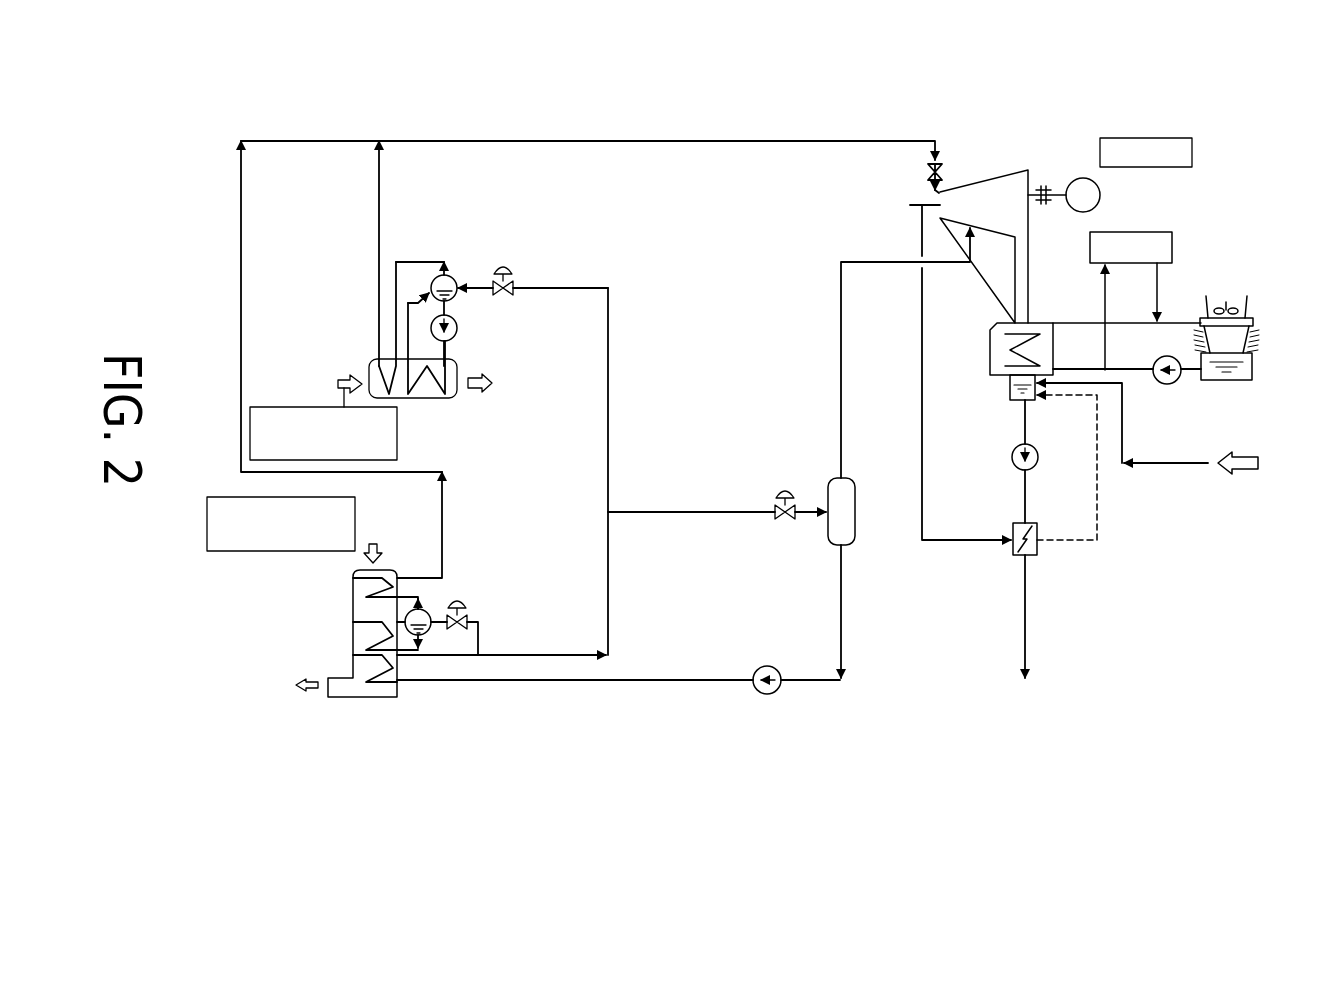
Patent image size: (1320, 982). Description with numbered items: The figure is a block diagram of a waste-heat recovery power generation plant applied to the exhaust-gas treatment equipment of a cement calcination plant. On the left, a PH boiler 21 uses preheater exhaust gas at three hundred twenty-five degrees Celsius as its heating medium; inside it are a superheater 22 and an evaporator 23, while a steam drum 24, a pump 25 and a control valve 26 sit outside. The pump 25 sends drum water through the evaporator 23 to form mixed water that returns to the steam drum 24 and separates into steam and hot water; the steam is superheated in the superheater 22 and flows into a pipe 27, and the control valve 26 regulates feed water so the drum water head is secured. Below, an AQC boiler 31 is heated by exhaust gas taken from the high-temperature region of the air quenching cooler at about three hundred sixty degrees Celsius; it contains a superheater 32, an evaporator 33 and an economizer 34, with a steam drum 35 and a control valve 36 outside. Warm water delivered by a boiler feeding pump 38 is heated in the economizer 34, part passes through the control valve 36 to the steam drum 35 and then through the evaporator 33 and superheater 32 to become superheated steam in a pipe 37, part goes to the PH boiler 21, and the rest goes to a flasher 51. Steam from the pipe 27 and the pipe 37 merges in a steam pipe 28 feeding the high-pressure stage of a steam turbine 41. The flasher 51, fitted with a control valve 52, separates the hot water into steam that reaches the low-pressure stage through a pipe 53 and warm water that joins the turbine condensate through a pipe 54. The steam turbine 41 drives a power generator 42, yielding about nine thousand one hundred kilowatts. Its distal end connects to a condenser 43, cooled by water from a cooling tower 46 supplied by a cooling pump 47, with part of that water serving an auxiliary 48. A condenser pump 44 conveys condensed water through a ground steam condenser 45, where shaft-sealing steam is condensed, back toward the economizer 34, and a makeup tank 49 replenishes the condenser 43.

The PH boiler 21 is at (447, 398).
The superheater 22 is at (388, 393).
The evaporator 23 is at (430, 396).
The steam drum 24 is at (455, 279).
The pump 25 is at (460, 328).
The control valve 26 is at (508, 270).
The pipe 27 is at (377, 240).
The steam pipe 28 is at (812, 140).
The AQC boiler 31 is at (368, 697).
The superheater 32 is at (353, 587).
The evaporator 33 is at (353, 632).
The economizer 34 is at (353, 665).
The steam drum 35 is at (427, 609).
The control valve 36 is at (468, 603).
The pipe 37 is at (239, 262).
The boiler feeding pump 38 is at (767, 694).
The steam turbine 41 is at (985, 181).
The power generator 42 is at (1101, 195).
The condenser 43 is at (990, 350).
The condenser pump 44 is at (1012, 457).
The ground steam condenser 45 is at (1037, 548).
The cooling tower 46 is at (1253, 368).
The cooling pump 47 is at (1165, 384).
The auxiliary 48 is at (1147, 232).
The makeup tank 49 is at (1240, 470).
The flasher 51 is at (828, 533).
The control valve 52 is at (781, 486).
The pipe 53 is at (840, 383).
The pipe 54 is at (838, 614).